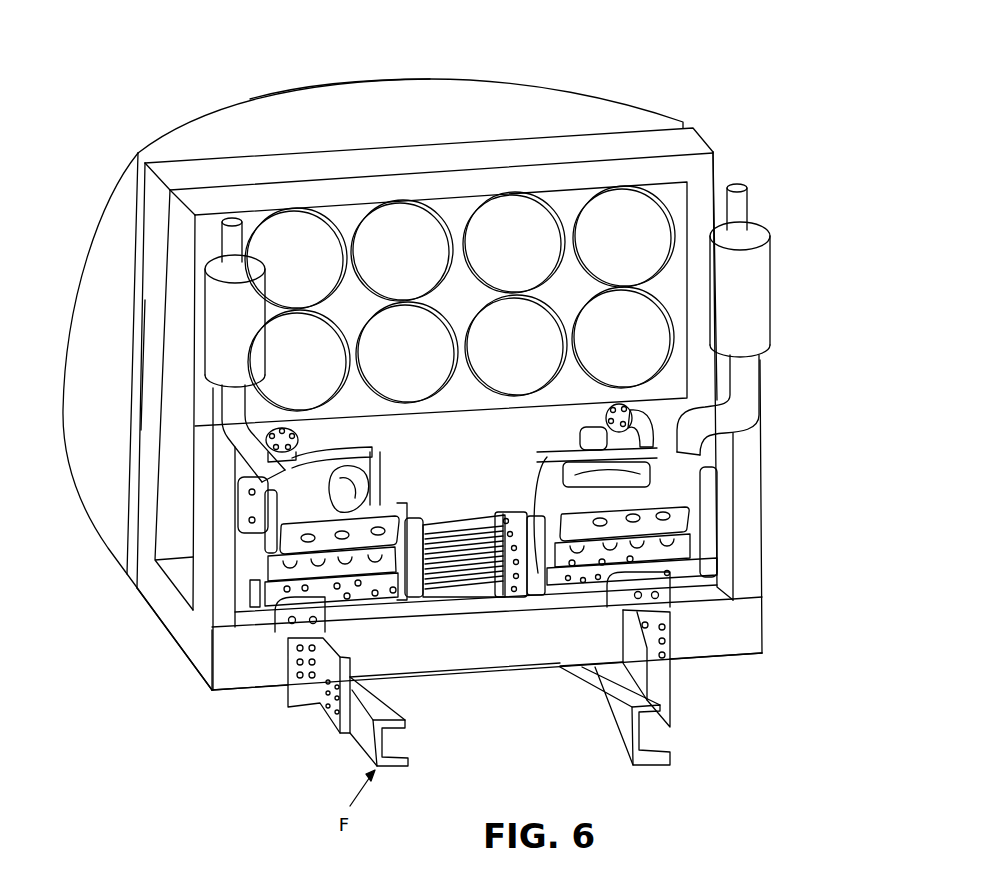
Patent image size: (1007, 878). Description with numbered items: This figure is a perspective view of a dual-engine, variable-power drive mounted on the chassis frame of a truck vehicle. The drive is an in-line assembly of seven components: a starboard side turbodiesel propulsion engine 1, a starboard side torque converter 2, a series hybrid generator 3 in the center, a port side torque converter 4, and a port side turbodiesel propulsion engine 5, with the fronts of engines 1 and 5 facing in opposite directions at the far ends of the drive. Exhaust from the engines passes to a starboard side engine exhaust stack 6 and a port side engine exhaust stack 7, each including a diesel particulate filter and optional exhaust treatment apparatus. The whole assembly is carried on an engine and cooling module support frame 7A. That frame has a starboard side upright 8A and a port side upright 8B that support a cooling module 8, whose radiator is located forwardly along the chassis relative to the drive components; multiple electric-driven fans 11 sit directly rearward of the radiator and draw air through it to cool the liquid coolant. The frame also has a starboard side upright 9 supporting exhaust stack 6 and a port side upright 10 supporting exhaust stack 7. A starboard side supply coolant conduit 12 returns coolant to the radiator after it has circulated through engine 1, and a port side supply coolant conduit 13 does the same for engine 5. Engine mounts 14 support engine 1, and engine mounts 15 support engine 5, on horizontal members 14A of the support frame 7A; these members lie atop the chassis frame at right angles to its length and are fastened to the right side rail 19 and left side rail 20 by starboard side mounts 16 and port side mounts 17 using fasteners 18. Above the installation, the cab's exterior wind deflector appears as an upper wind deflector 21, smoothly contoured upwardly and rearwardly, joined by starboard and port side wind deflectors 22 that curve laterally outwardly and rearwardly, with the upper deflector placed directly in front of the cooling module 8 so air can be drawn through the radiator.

The starboard side turbodiesel propulsion engine 1 is at (555, 443).
The starboard side torque converter 2 is at (513, 502).
The series hybrid generator 3 is at (453, 520).
The port side torque converter 4 is at (407, 500).
The port side turbodiesel propulsion engine 5 is at (403, 463).
The starboard side engine exhaust stack 6 is at (775, 273).
The port side engine exhaust stack 7 is at (245, 330).
The engine and cooling module support frame 7A is at (190, 635).
The cooling module 8 is at (712, 125).
The starboard side upright 8A is at (707, 203).
The port side upright 8B is at (148, 490).
The starboard side upright 9 is at (760, 528).
The port side upright 10 is at (221, 598).
The electric-driven fans 11 is at (325, 227).
The starboard side supply coolant conduit 12 is at (606, 410).
The port side supply coolant conduit 13 is at (300, 442).
The engine mounts 14 is at (764, 591).
The horizontal members 14A is at (474, 655).
The engine mounts 15 is at (328, 614).
The starboard side mounts 16 is at (673, 653).
The port side mounts 17 is at (350, 680).
The fasteners 18 is at (300, 667).
The right side rail 19 is at (670, 765).
The left side rail 20 is at (367, 753).
The upper wind deflector 21 is at (388, 78).
The starboard side and port side wind deflectors 22 is at (117, 175).